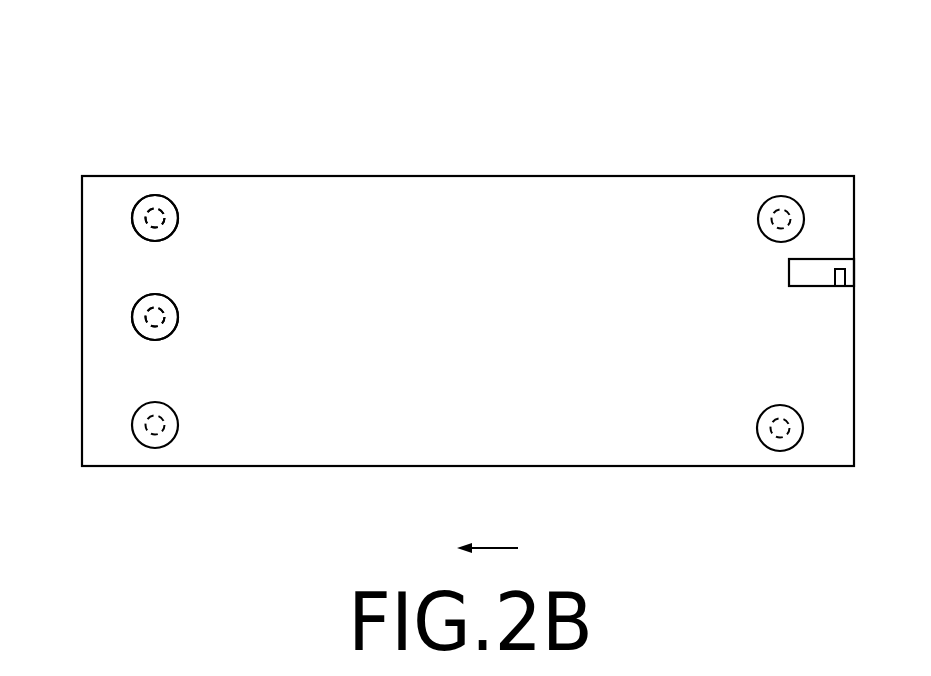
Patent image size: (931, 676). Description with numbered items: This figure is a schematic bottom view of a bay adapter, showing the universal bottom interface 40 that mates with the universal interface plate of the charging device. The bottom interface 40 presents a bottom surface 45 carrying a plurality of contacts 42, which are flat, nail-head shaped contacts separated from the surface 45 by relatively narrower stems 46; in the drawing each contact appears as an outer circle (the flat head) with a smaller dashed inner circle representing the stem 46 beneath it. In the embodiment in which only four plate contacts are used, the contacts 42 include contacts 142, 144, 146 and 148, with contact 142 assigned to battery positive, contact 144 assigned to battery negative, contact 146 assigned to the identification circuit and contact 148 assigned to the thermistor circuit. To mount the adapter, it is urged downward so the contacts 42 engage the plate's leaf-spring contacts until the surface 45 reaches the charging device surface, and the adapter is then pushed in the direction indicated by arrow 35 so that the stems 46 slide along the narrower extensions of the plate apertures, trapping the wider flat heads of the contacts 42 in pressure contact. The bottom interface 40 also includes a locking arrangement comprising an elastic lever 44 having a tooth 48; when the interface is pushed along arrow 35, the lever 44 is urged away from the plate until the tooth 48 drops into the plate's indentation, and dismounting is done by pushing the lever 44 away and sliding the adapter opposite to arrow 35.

The arrow 35 is at (502, 546).
The universal bottom interface 40 is at (122, 78).
The contacts 42 is at (143, 232).
The elastic lever 44 is at (798, 276).
The bottom surface 45 is at (226, 199).
The stems 46 is at (165, 217).
The tooth 48 is at (842, 278).
The contact 142 is at (778, 196).
The contact 144 is at (773, 447).
The contact 146 is at (142, 200).
The contact 148 is at (138, 336).